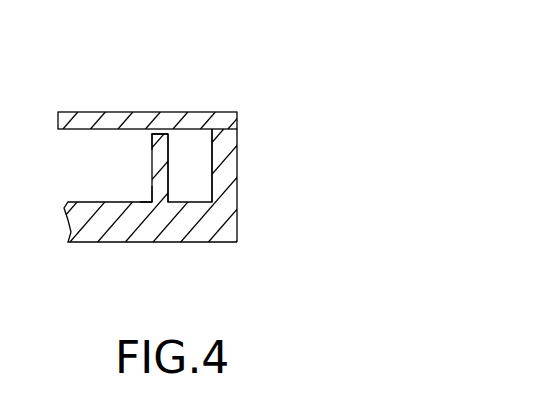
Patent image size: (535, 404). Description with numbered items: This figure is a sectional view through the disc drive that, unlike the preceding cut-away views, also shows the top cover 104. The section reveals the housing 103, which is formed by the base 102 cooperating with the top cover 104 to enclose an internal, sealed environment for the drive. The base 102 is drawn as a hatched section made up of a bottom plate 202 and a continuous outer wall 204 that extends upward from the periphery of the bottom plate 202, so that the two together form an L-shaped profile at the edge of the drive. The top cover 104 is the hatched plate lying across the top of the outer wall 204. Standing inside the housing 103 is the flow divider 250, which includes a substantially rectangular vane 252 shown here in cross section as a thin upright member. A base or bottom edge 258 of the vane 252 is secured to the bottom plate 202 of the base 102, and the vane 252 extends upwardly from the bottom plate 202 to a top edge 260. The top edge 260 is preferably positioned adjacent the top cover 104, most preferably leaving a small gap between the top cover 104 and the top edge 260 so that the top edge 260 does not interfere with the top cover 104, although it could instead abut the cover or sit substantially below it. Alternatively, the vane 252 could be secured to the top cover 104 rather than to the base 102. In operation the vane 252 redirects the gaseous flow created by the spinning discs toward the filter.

The base 102 is at (247, 213).
The housing 103 is at (348, 160).
The top cover 104 is at (118, 108).
The bottom plate 202 is at (90, 232).
The outer wall 204 is at (227, 145).
The flow divider 250 is at (188, 150).
The vane 252 is at (158, 170).
The bottom edge 258 is at (153, 200).
The top edge 260 is at (150, 134).